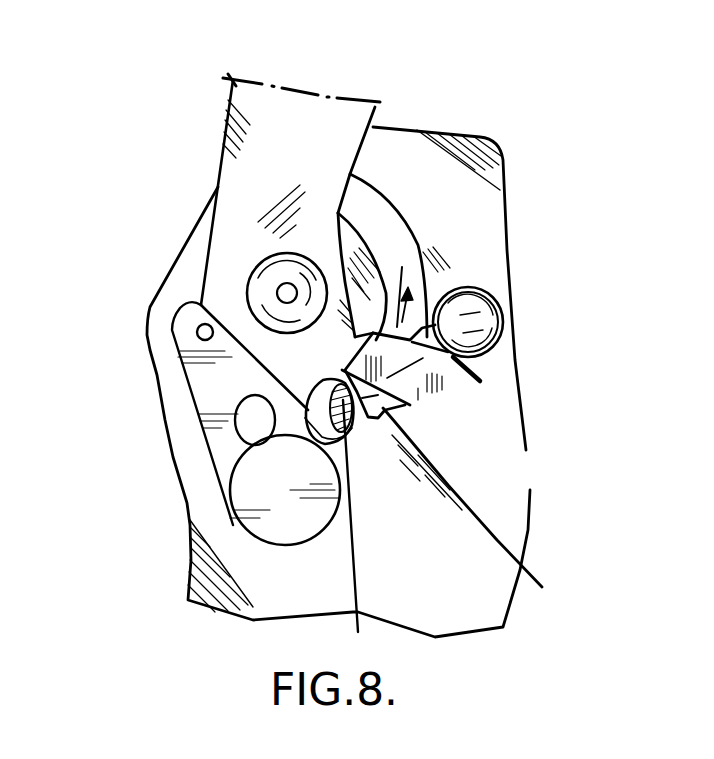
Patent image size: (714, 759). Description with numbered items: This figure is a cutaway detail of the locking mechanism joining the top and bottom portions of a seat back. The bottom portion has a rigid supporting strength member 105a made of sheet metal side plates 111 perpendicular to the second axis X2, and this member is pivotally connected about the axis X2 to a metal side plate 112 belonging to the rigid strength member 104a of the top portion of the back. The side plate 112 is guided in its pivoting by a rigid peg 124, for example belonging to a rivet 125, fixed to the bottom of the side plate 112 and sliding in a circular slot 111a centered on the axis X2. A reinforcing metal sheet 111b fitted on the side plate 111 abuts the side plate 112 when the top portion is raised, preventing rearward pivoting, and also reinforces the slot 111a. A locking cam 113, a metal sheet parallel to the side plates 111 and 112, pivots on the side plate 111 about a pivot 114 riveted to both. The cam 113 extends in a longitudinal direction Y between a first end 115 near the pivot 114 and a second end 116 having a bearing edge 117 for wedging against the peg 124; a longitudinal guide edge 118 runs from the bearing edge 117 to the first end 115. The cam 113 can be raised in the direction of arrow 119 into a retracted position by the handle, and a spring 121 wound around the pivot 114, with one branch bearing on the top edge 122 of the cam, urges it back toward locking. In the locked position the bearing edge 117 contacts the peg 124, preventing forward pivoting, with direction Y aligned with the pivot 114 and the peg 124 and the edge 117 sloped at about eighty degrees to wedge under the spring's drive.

The rigid strength member 104a is at (353, 98).
The supporting strength member 105a is at (500, 140).
The side plate 111 is at (510, 527).
The circular slot 111a is at (428, 277).
The reinforcing metal sheet 111b is at (255, 495).
The side plate 112 is at (275, 131).
The locking cam 113 is at (412, 385).
The pivot 114 is at (447, 327).
The first end 115 is at (433, 312).
The second end 116 is at (355, 366).
The bearing edge 117 is at (470, 516).
The longitudinal guide edge 118 is at (410, 405).
The arrow 119 is at (413, 233).
The spring 121 is at (482, 380).
The top edge 122 is at (357, 335).
The peg 124 is at (336, 522).
The rivet 125 is at (300, 416).
The second axis X2 is at (287, 293).
The longitudinal direction Y is at (430, 328).